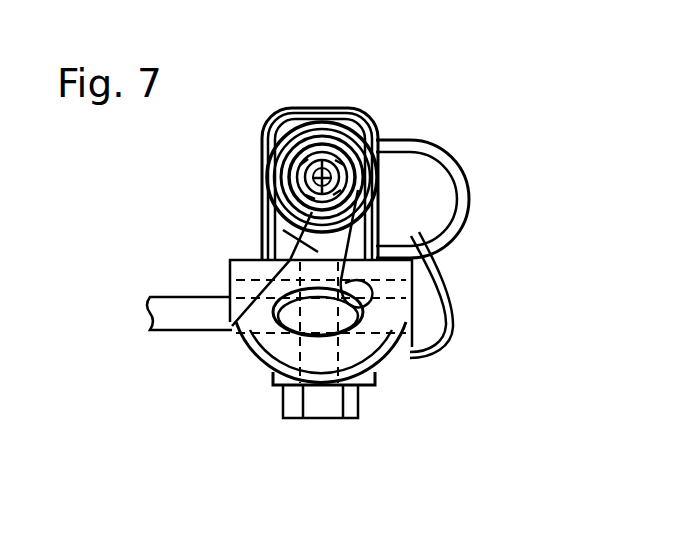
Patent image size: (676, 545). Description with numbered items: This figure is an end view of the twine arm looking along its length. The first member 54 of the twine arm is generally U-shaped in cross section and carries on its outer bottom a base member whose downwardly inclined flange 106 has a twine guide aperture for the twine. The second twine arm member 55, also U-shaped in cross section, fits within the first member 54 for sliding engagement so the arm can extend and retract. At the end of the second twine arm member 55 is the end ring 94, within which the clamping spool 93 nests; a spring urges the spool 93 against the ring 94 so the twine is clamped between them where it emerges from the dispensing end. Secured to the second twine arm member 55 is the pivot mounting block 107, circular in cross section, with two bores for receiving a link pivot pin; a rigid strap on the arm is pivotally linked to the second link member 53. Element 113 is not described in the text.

The second link member 53 is at (181, 290).
The first member 54 is at (266, 119).
The second twine arm member 55 is at (274, 230).
The clamping spool 93 is at (293, 108).
The end ring 94 is at (352, 108).
The downwardly inclined flange 106 is at (388, 370).
The pivot mounting block 107 is at (262, 326).
The D-shaped loop 113 is at (468, 205).